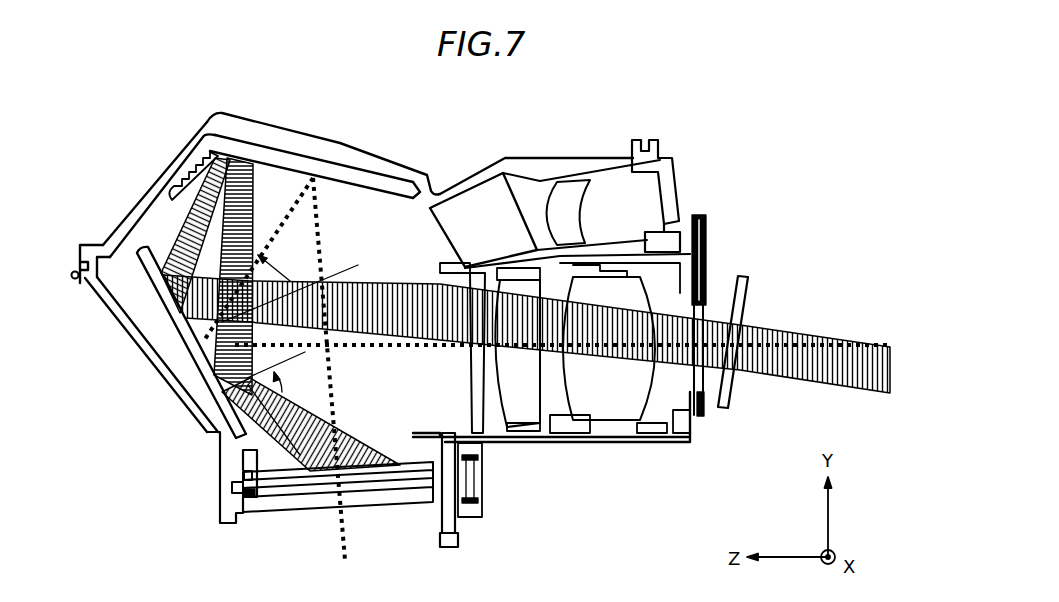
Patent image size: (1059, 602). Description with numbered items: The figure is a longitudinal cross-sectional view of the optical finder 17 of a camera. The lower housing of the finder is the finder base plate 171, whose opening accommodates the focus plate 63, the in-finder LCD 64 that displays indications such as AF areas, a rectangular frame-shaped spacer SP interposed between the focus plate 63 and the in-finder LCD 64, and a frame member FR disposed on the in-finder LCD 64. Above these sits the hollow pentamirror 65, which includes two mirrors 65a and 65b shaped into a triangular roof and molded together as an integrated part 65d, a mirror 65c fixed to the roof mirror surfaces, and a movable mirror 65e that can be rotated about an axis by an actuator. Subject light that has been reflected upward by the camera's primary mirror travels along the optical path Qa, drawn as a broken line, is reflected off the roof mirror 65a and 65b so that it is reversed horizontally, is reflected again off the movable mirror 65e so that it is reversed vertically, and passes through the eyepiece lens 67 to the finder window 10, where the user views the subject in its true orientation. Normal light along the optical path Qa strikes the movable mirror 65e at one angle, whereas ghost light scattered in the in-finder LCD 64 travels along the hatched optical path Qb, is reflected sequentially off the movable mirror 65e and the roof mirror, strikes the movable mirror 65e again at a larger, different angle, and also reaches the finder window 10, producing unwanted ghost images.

The finder window 10 is at (751, 297).
The optical finder 17 is at (127, 187).
The focus plate 63 is at (290, 500).
The in-finder LCD 64 is at (388, 477).
The pentamirror 65 is at (387, 151).
The mirror 65a is at (262, 148).
The mirror 65b is at (315, 131).
The mirror 65c is at (178, 154).
The integrated part 65d is at (328, 162).
The movable mirror 65e is at (193, 350).
The eyepiece lens 67 is at (624, 447).
The finder base plate 171 is at (192, 417).
The frame member FR is at (242, 474).
The spacer SP is at (236, 492).
The optical path Qa is at (318, 218).
The optical path Qb is at (383, 280).